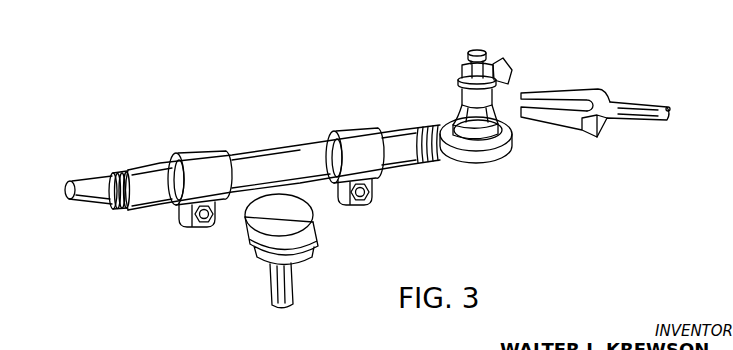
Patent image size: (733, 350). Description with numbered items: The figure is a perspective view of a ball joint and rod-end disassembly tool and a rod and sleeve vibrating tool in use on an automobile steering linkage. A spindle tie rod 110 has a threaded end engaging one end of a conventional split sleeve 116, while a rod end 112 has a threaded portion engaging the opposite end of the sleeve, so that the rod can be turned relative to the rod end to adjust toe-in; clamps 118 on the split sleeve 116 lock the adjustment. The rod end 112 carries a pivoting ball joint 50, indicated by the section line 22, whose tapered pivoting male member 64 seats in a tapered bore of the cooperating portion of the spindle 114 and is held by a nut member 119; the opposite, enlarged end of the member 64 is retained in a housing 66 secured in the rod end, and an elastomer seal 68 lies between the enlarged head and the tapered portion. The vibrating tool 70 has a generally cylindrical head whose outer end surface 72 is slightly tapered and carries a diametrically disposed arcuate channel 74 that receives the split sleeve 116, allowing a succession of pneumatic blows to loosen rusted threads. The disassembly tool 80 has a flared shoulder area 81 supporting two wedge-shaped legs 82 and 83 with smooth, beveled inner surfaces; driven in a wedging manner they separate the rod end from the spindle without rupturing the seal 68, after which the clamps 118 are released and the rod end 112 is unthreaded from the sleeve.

The section line 22- 22 is at (491, 176).
The ball joint 50 is at (475, 105).
The pivoting male member 64 is at (487, 52).
The housing 66 is at (485, 135).
The elastomer casing or seal 68 is at (455, 117).
The vibrating tool 70 is at (280, 272).
The outer end surface 72 is at (305, 223).
The channel 74 is at (255, 218).
The disassembly tool 80 is at (612, 123).
The flared shoulder area 81 is at (600, 123).
The wedge-shaped leg 82 is at (555, 92).
The wedge-shaped leg 83 is at (553, 124).
The spindle tie rod 110 is at (88, 187).
The rod end 112 is at (423, 165).
The spindle 114 is at (508, 73).
The split sleeve 116 is at (262, 160).
The clamps 118 is at (183, 207).
The nut member 119 is at (462, 70).